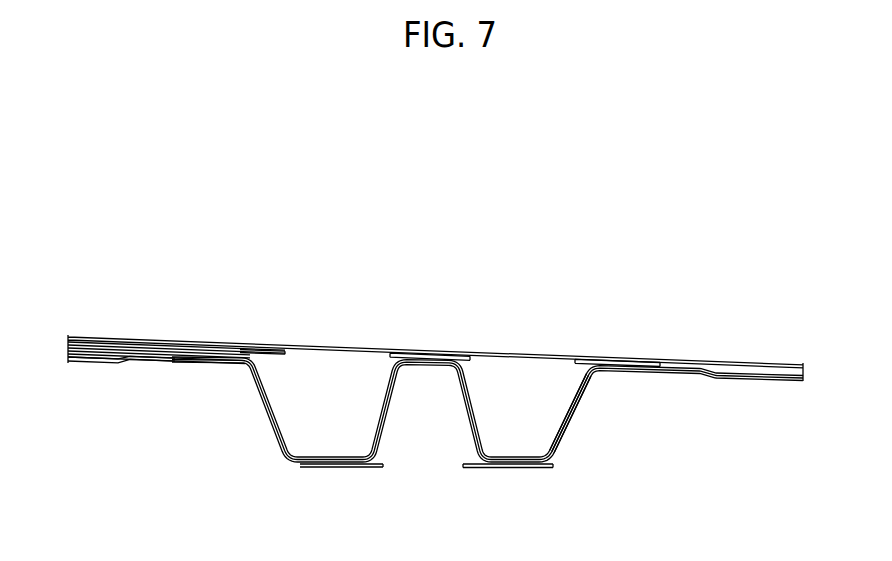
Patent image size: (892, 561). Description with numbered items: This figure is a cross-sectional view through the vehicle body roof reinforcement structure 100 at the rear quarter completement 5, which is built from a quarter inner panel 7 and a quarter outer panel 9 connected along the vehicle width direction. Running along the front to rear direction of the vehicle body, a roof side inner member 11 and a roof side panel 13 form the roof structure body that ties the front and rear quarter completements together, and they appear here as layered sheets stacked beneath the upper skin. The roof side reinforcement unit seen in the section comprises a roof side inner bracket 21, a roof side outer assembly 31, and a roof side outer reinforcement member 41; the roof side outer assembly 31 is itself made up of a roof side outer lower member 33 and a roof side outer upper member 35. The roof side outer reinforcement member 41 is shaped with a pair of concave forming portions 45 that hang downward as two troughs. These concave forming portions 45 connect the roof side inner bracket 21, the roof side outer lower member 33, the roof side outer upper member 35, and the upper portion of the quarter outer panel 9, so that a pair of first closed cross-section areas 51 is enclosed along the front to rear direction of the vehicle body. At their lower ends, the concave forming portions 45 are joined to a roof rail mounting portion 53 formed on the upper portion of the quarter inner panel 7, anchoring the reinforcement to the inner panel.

The vehicle body roof reinforcement structure 100 is at (453, 213).
The quarter outer panel 9 is at (334, 347).
The quarter completement 5 is at (527, 352).
The roof side outer assembly 31 is at (148, 286).
The roof side outer lower member 33 is at (92, 345).
The roof side outer upper member 35 is at (131, 344).
The roof side panel 13 is at (173, 344).
The roof side inner member 11 is at (103, 362).
The roof side inner bracket 21 is at (277, 350).
The quarter inner panel 7 is at (270, 431).
The roof side outer reinforcement member 41 is at (576, 416).
The first closed cross-section area 51 is at (324, 424).
The concave forming portion 45 is at (333, 468).
The roof rail mounting portion 53 is at (379, 470).